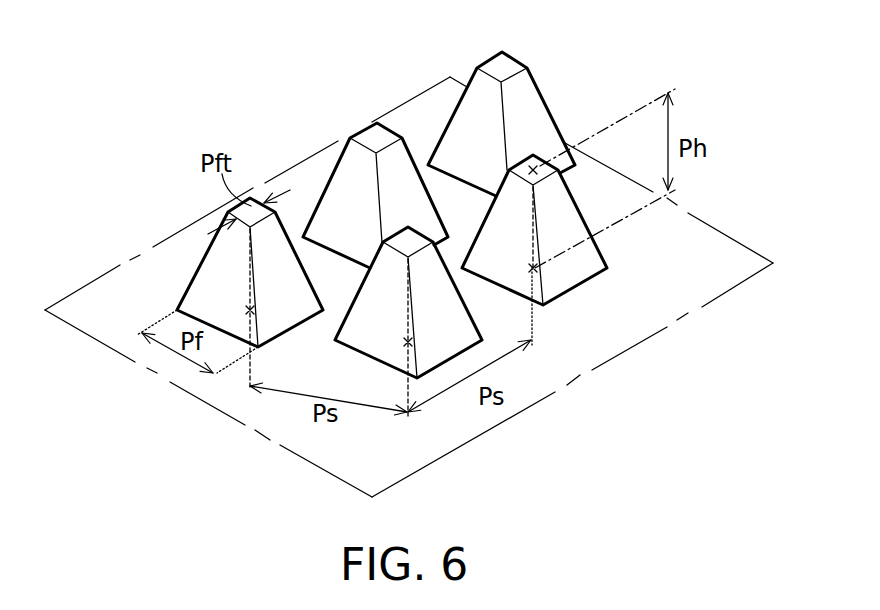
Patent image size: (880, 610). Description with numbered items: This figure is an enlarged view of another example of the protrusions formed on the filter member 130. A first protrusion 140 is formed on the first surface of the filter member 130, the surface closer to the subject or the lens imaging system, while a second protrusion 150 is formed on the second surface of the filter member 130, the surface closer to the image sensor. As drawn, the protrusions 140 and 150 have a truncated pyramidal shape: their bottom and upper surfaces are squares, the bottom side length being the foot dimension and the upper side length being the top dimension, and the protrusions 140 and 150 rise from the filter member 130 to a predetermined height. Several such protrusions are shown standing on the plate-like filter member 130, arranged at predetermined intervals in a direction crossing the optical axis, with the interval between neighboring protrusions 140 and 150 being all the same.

The filter member 130 is at (615, 325).
The first protrusion 140 is at (328, 184).
The second protrusion 150 is at (348, 215).